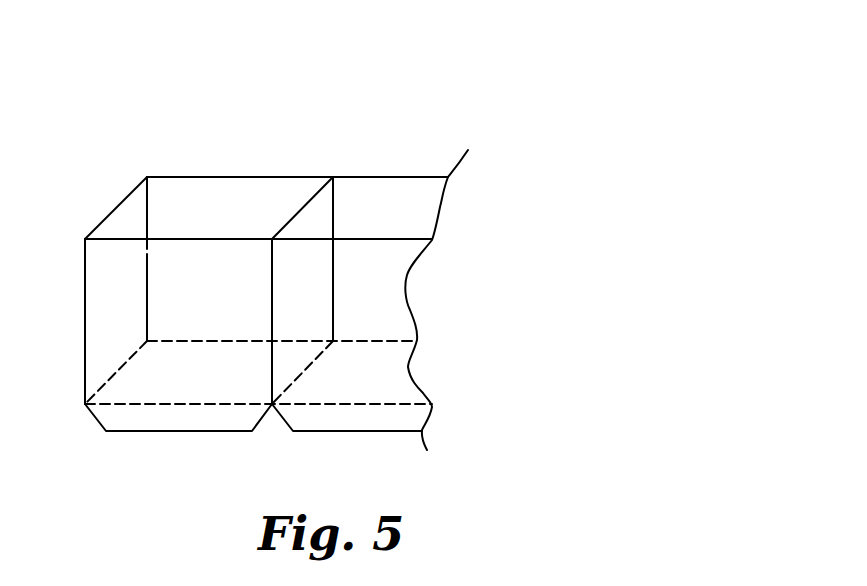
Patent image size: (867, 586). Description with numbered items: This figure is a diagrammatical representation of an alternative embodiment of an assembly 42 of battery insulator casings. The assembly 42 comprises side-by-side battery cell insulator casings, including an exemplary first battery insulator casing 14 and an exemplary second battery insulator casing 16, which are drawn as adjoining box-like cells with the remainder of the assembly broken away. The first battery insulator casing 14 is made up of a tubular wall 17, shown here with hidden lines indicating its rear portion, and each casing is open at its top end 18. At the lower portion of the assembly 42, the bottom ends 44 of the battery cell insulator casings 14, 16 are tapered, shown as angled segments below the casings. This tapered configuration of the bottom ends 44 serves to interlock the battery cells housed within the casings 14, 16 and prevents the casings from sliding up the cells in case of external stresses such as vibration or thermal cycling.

The alternative embodiment of assembly of battery insulator casings 42 is at (463, 87).
The first battery insulator casing 14 is at (205, 192).
The second battery insulator casing 16 is at (358, 193).
The top end 18 is at (133, 190).
The tubular wall 17 is at (153, 290).
The bottom ends 44 is at (95, 420).